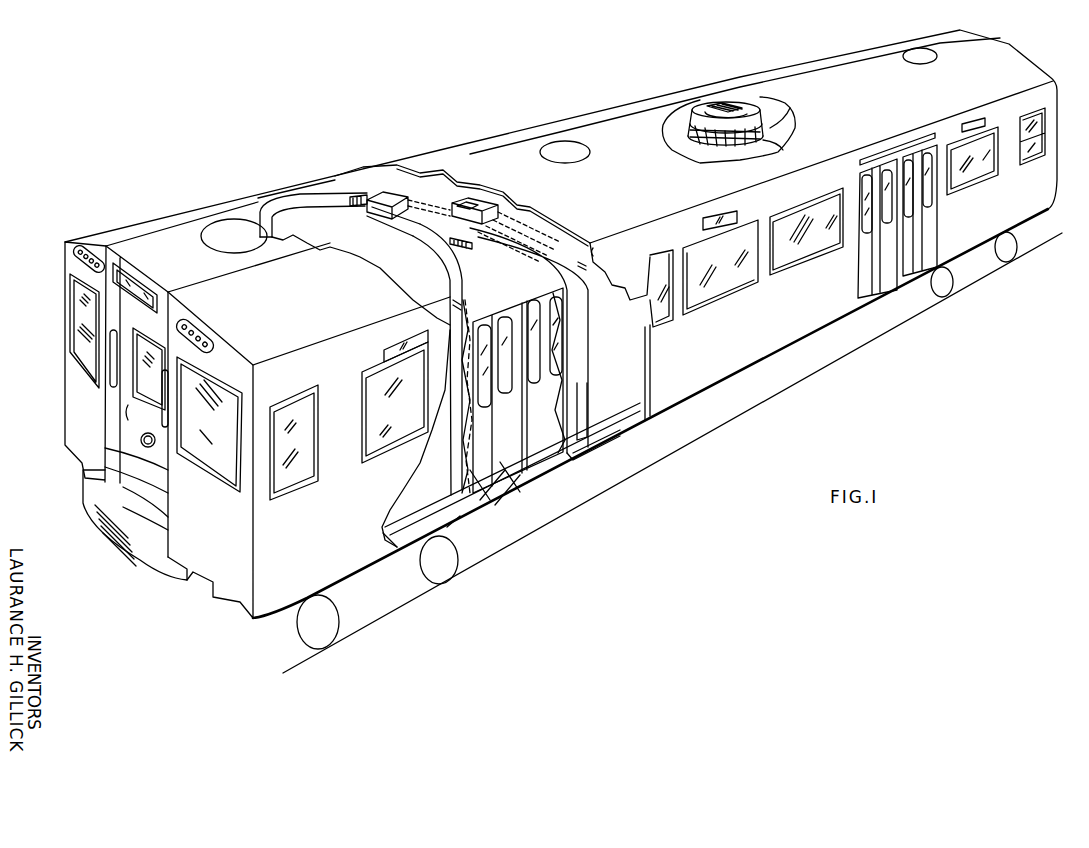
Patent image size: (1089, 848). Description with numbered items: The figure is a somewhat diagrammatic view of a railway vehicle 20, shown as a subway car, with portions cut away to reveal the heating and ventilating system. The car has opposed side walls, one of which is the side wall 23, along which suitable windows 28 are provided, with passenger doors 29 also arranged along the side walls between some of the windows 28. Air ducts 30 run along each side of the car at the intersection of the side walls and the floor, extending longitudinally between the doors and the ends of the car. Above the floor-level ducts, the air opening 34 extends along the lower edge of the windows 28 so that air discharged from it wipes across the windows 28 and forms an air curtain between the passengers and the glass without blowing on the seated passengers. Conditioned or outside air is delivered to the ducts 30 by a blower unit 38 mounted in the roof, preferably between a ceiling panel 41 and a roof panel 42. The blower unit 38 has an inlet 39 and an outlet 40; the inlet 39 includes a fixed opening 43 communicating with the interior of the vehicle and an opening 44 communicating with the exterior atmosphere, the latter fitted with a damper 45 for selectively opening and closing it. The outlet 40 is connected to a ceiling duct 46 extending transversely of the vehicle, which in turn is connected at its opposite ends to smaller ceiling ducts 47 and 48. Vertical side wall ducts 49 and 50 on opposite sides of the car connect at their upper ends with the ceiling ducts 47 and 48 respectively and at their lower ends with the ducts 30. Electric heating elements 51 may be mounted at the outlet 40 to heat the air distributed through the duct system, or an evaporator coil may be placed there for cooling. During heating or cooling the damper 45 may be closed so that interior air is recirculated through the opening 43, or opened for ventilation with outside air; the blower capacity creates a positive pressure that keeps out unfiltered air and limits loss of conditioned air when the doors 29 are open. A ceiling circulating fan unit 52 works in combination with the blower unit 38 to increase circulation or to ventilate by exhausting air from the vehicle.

The railway vehicle 20 is at (822, 51).
The side wall 23 is at (650, 373).
The windows 28 is at (783, 257).
The passenger doors 29 is at (923, 253).
The air ducts 30 is at (447, 527).
The air opening 34 is at (655, 317).
The blower unit 38 is at (440, 180).
The inlet 39 is at (470, 199).
The outlet 40 is at (401, 190).
The ceiling panel 41 is at (798, 153).
The roof panel 42 is at (773, 103).
The fixed opening 43 is at (470, 247).
The opening 44 is at (512, 206).
The damper 45 is at (490, 197).
The ceiling duct 46 is at (407, 229).
The ceiling duct 47 is at (450, 278).
The ceiling duct 48 is at (372, 189).
The vertical side wall duct 49 is at (448, 392).
The vertical side wall duct 50 is at (344, 222).
The electric heating elements 51 is at (418, 192).
The ceiling circulating fan unit 52 is at (740, 97).